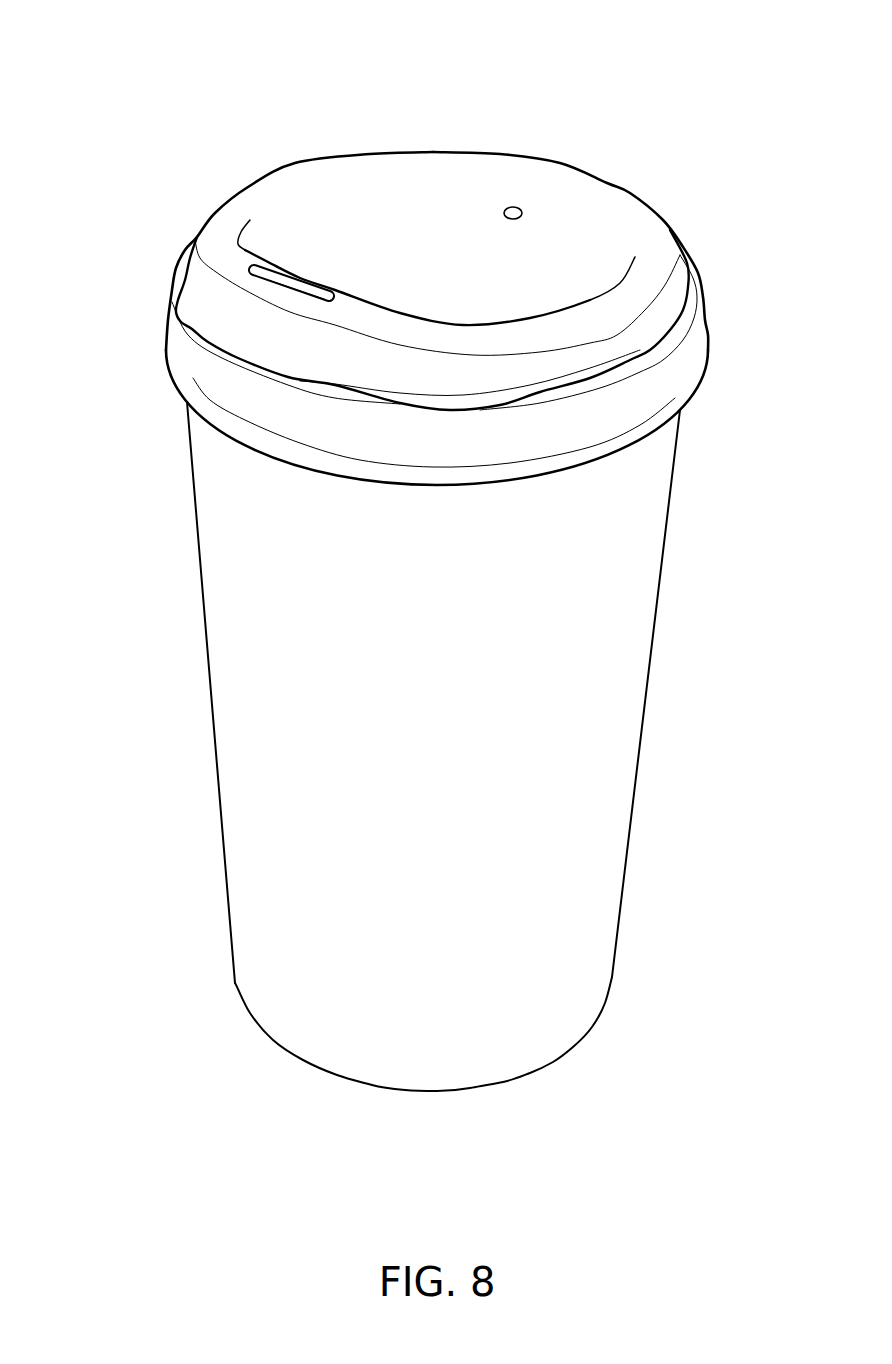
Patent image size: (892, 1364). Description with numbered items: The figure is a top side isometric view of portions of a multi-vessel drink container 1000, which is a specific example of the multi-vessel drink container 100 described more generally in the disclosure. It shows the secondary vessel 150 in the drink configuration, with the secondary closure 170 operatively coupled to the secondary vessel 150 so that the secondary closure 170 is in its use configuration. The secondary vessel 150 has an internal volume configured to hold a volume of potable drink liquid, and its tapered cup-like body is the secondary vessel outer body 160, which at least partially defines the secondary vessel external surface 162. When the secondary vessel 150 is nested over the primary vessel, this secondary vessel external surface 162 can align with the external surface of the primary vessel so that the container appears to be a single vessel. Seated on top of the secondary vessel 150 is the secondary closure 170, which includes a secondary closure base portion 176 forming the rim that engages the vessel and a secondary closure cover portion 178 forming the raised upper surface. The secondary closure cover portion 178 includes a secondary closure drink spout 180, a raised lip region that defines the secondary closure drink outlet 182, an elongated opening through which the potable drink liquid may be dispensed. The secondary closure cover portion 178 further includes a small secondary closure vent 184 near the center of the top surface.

The multi-vessel drink container 100 is at (253, 59).
The multi-vessel drink container 1000 is at (245, 98).
The secondary vessel 150 is at (676, 594).
The secondary vessel outer body 160 is at (651, 652).
The secondary vessel external surface 162 is at (647, 705).
The secondary closure 170 is at (500, 140).
The secondary closure base portion 176 is at (703, 320).
The secondary closure cover portion 178 is at (588, 216).
The secondary closure drink spout 180 is at (260, 300).
The secondary closure drink outlet 182 is at (268, 275).
The secondary closure vent 184 is at (514, 207).